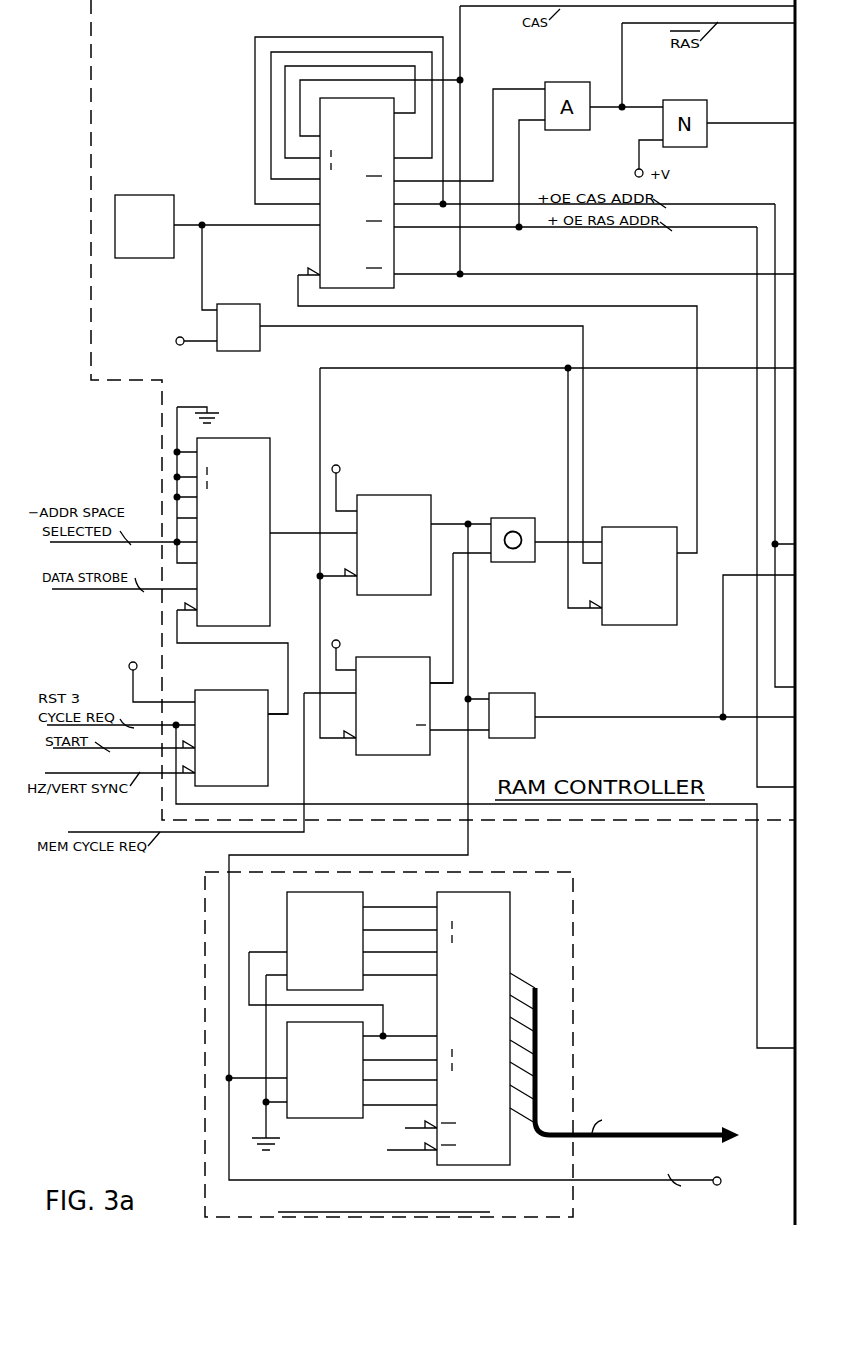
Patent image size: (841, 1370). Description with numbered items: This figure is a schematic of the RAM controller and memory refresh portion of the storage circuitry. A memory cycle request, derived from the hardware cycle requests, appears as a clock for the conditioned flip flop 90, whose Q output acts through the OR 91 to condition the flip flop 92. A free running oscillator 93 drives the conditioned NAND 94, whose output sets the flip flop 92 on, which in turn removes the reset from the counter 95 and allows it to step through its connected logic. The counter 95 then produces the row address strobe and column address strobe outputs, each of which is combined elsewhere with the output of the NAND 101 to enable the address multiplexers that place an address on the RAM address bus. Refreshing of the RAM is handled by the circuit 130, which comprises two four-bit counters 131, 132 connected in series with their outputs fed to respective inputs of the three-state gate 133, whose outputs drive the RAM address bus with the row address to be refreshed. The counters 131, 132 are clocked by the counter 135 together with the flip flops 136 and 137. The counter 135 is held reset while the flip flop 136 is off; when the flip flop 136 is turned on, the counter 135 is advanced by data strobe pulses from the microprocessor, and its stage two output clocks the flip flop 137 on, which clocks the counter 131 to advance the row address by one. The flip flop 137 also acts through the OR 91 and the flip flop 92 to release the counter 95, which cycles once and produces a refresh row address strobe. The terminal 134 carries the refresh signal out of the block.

The free running oscillator 93 is at (150, 196).
The conditioned NAND 94 is at (243, 304).
The counter 95 is at (320, 251).
The counter 135 is at (270, 607).
The flip flop 136 is at (235, 690).
The flip flop 137 is at (431, 503).
The OR 91 is at (511, 518).
The flip flop 92 is at (638, 526).
The conditioned flip flop 90 is at (405, 757).
The NAND 101 is at (507, 693).
The circuit 130 is at (575, 921).
The 4-bit counter 131 is at (355, 1121).
The 4-bit counter 132 is at (363, 895).
The three-state gate 133 is at (510, 897).
The refresh terminal 134 is at (719, 1190).